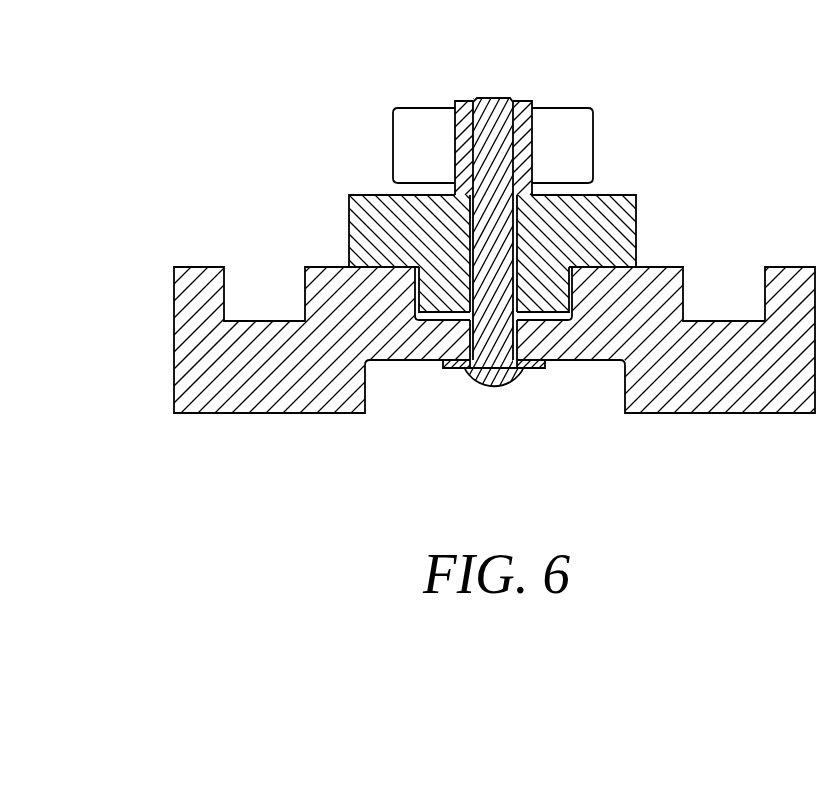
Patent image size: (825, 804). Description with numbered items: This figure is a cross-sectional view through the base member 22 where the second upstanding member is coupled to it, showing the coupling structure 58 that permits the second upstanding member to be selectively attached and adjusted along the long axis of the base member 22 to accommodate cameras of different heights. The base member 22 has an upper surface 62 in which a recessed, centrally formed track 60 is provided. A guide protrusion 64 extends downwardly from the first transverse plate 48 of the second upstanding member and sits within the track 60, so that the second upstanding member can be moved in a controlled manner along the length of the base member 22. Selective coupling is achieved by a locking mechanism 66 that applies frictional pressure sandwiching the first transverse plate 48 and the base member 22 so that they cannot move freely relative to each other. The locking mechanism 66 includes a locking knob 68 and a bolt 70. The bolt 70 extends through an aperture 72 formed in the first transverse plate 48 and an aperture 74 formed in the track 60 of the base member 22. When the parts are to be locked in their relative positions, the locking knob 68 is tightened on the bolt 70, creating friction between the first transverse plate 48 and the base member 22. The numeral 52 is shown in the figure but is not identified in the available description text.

The base member 22 is at (177, 420).
The first transverse plate 48 is at (349, 218).
The left portion of base 52 is at (174, 351).
The coupling structure 58 is at (372, 108).
The track 60 is at (417, 293).
The upper surface 62 is at (660, 267).
The guide protrusion 64 is at (442, 295).
The locking mechanism 66 is at (590, 103).
The locking knob 68 is at (528, 130).
The bolt 70 is at (487, 98).
The aperture 72 is at (487, 243).
The aperture 74 is at (520, 340).